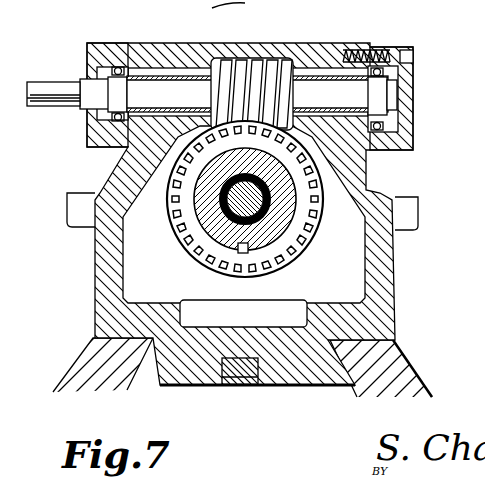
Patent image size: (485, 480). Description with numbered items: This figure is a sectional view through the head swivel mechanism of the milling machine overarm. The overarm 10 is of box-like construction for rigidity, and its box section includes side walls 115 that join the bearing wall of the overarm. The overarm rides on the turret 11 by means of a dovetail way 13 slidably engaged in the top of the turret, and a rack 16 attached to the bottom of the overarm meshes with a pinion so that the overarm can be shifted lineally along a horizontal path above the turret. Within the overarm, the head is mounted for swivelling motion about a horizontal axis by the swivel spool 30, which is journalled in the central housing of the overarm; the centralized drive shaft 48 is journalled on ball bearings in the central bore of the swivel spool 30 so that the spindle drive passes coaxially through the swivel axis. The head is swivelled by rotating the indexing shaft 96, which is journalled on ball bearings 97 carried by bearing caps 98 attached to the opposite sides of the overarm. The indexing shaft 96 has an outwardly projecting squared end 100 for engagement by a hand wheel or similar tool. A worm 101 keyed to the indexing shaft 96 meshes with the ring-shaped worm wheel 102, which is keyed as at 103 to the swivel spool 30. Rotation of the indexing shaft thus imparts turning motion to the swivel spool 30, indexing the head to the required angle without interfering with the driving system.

The overarm 10 is at (88, 249).
The turret 11 is at (66, 362).
The dovetail way 13 is at (350, 363).
The rack 16 is at (236, 380).
The swivel spool 30 is at (273, 223).
The centralized drive shaft 48 is at (237, 198).
The indexing shaft 96 is at (153, 93).
The ball bearings 97 is at (118, 66).
The bearing caps 98 is at (92, 132).
The squared end 100 is at (67, 88).
The worm 101 is at (260, 65).
The worm wheel 102 is at (323, 205).
The key 103 is at (252, 256).
The side walls 115 is at (102, 275).